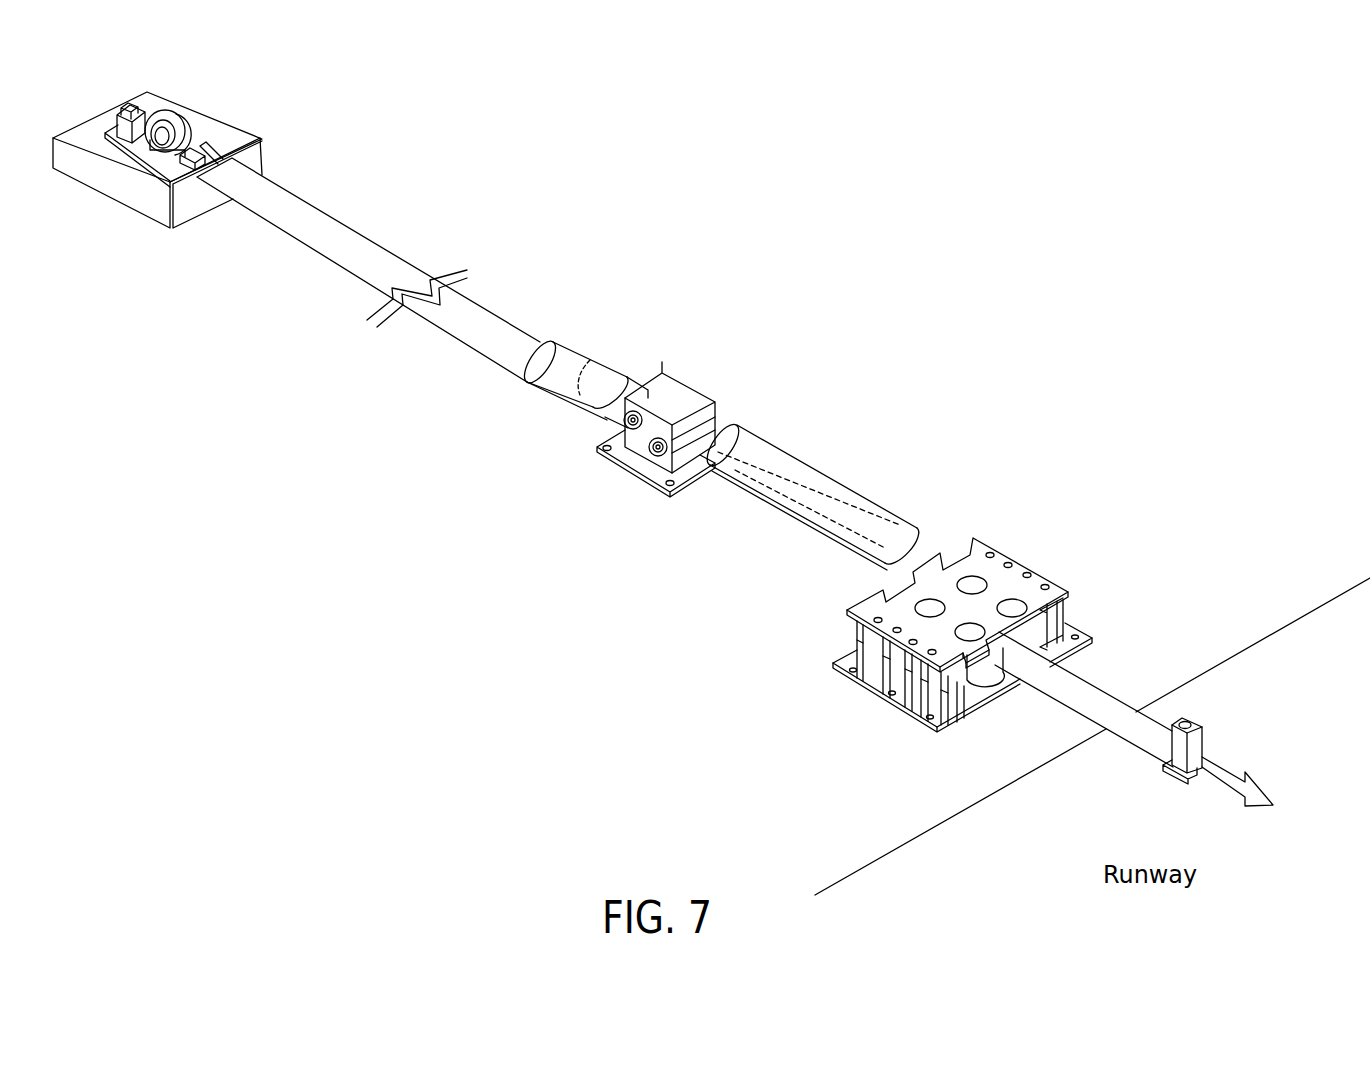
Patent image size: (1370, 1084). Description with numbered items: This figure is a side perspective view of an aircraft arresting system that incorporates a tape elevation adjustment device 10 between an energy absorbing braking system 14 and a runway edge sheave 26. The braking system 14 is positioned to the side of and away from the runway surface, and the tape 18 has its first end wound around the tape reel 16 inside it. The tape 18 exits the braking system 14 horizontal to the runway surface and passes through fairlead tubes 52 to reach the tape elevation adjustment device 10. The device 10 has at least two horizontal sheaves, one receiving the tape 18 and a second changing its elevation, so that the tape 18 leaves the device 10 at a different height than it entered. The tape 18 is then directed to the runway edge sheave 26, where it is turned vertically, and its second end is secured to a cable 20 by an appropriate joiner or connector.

The energy absorbing braking system 14 is at (192, 167).
The tape reel 16 is at (157, 139).
The tape 18 is at (389, 268).
The fairlead tubes 52 is at (573, 397).
The tape elevation adjustment device 10 is at (687, 396).
The runway edge sheave 26 is at (1008, 576).
The cable 20 is at (1198, 743).